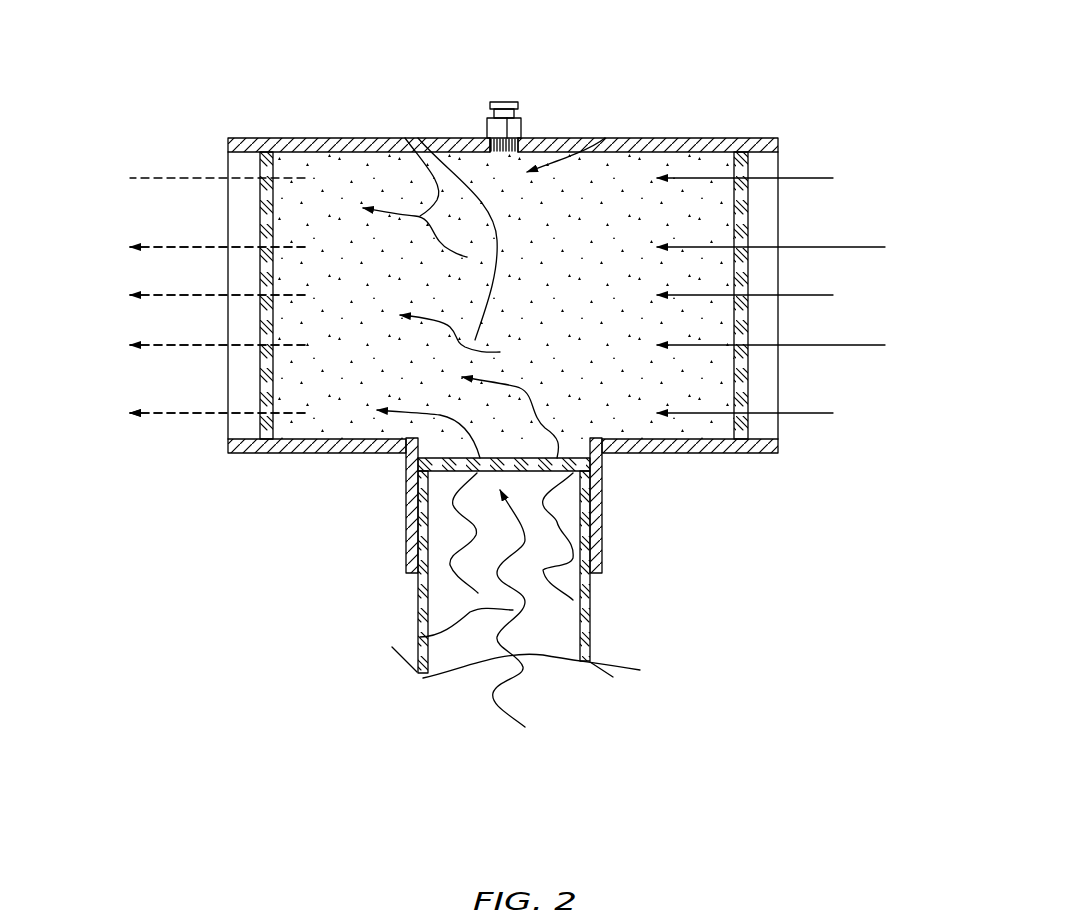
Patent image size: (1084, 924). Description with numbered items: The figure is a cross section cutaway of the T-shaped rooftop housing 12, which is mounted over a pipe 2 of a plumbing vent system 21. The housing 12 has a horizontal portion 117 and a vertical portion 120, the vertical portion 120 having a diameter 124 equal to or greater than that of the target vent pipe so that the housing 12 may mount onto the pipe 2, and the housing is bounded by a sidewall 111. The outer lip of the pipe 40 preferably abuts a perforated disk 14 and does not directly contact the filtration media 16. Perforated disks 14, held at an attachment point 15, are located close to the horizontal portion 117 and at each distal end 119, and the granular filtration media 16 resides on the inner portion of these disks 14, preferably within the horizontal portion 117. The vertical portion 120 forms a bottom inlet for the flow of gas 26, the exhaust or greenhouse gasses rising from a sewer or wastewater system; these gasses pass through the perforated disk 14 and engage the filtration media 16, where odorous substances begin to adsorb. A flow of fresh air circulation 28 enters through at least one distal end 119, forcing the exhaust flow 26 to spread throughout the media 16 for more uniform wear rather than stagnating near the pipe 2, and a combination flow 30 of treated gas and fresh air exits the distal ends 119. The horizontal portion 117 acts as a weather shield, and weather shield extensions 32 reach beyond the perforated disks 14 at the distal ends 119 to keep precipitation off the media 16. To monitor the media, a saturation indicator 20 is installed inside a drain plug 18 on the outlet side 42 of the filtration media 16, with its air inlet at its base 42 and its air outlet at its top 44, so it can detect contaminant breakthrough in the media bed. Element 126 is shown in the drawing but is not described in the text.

The pipe 2 is at (590, 617).
The rooftop housing 12 is at (290, 138).
The perforated disks 14 is at (262, 158).
The attachment point 15 is at (778, 150).
The filtration media 16 is at (518, 290).
The drain plug 18 is at (515, 128).
The saturation indicator 20 is at (510, 100).
The plumbing vent system 21 is at (607, 663).
The flow of gas 26 is at (418, 138).
The flow of fresh air circulation 28 is at (822, 413).
The combination flow 30 is at (172, 413).
The weather shield extension 32 is at (762, 284).
The outer lip of the pipe 40 is at (420, 462).
The outlet side 42 is at (485, 138).
The top 44 is at (518, 98).
The sidewall 111 is at (266, 455).
The horizontal portion 117 is at (362, 134).
The distal ends 119 is at (780, 446).
The vertical portion 120 is at (606, 464).
The diameter 124 is at (420, 590).
The tube wall 126 is at (406, 505).